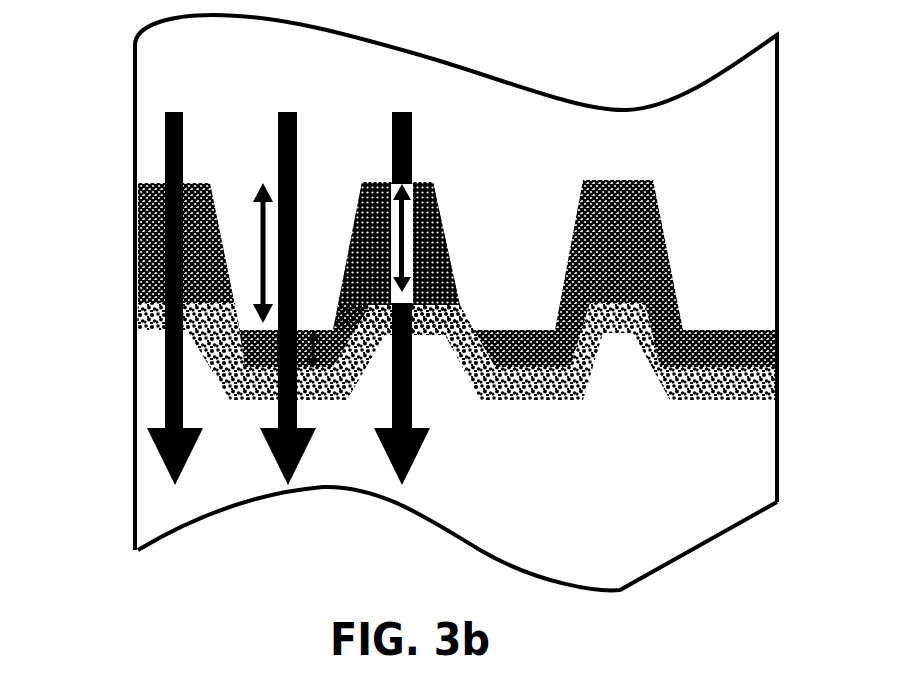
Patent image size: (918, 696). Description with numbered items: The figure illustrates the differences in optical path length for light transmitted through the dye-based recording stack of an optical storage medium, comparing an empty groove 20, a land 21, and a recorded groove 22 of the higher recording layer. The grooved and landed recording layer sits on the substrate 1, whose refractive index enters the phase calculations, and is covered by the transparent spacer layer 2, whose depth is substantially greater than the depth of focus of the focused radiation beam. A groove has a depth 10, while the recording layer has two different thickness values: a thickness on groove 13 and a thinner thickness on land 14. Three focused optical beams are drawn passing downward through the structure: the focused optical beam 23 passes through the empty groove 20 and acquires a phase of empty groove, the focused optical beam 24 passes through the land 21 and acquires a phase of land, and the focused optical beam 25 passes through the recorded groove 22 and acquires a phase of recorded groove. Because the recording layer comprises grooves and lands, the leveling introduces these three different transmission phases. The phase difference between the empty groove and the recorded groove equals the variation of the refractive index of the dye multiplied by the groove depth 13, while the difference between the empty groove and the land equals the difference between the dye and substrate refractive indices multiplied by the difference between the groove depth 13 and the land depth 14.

The substrate 1 is at (765, 80).
The transparent spacer layer 2 is at (760, 477).
The depth 10 is at (262, 262).
The thickness on groove 13 is at (427, 203).
The thickness on land 14 is at (313, 372).
The empty groove 20 is at (138, 252).
The land 21 is at (255, 370).
The recorded groove 22 is at (446, 249).
The focused optical beam 23 is at (183, 173).
The focused optical beam 24 is at (297, 173).
The focused optical beam 25 is at (412, 167).